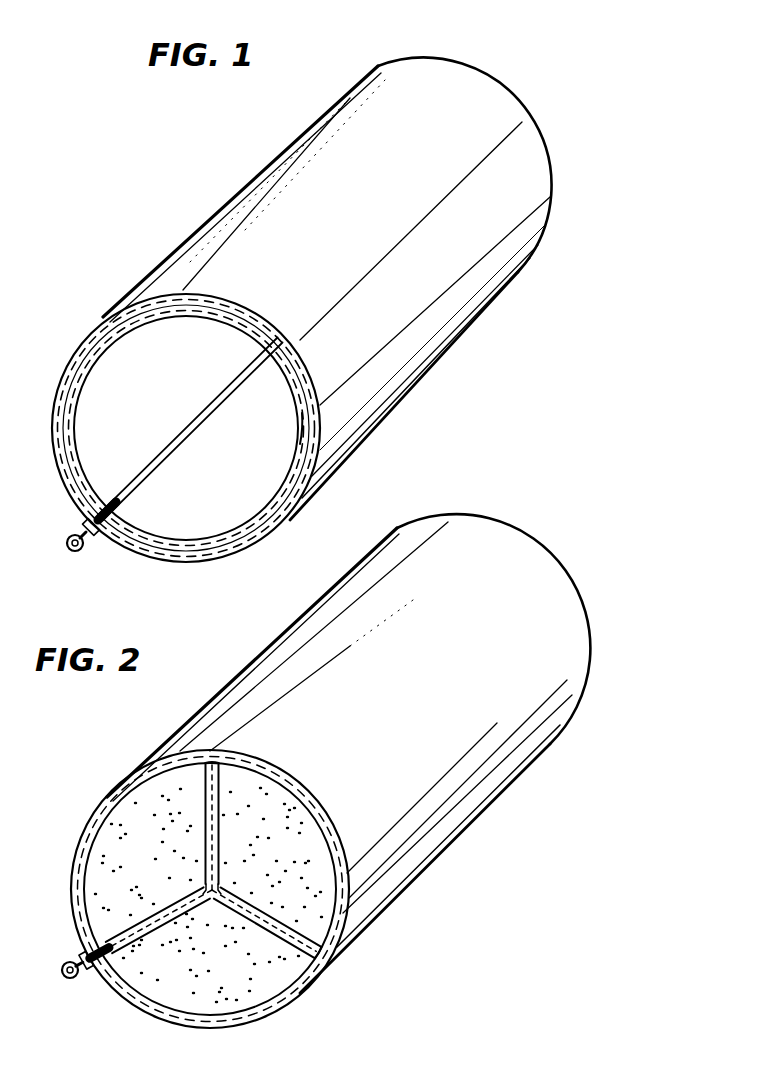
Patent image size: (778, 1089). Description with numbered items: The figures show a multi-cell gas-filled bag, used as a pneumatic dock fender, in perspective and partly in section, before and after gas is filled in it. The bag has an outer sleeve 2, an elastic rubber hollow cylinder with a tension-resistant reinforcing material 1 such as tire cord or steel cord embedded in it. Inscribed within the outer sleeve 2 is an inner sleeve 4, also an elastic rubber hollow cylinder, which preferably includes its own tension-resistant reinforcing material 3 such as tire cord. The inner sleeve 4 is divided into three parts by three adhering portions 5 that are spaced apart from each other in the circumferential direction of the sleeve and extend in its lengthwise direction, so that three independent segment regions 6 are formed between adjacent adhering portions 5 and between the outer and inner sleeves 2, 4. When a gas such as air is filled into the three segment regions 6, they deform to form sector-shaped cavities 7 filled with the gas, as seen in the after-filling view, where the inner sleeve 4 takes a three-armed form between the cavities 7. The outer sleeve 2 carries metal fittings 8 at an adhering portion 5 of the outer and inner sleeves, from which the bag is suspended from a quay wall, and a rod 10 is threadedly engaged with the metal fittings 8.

In FIG. 1, the tension-resistant reinforcing material 1 is at (250, 313).
In FIG. 1, the outer sleeve 2 is at (296, 337).
In FIG. 2, the outer sleeve 2 is at (118, 788).
In FIG. 1, the tension-resistant reinforcing material 3 is at (227, 318).
In FIG. 2, the tension-resistant reinforcing material 3 is at (180, 916).
In FIG. 1, the inner sleeve 4 is at (302, 413).
In FIG. 2, the inner sleeve 4 is at (152, 938).
In FIG. 1, the adhering portions 5 is at (168, 306).
In FIG. 1, the segment regions 6 is at (304, 385).
In FIG. 2, the sector-shaped cavities 7 is at (233, 967).
In FIG. 1, the metal fittings 8 is at (72, 553).
In FIG. 2, the metal fittings 8 is at (72, 983).
In FIG. 1, the rod 10 is at (178, 444).